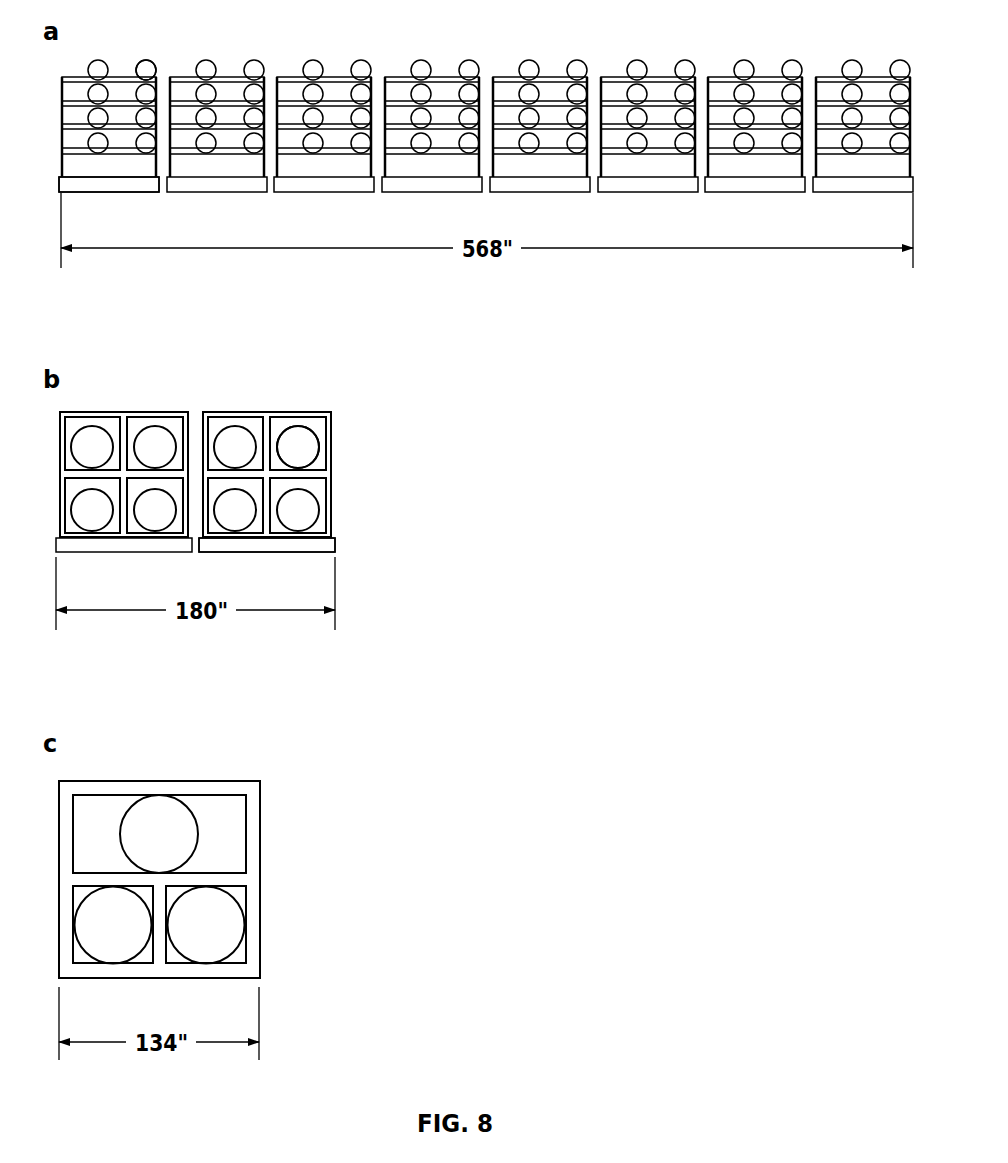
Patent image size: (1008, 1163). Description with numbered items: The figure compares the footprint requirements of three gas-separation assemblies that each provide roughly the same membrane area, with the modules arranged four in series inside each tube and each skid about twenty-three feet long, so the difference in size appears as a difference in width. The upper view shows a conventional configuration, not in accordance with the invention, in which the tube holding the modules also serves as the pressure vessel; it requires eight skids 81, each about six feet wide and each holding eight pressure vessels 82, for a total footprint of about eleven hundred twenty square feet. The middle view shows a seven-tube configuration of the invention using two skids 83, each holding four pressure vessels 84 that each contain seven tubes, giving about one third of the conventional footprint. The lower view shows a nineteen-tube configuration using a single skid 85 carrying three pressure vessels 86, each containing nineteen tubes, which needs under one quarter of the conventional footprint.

The skid 81 is at (136, 193).
The pressure vessel 82 is at (149, 61).
The skid 83 is at (336, 539).
The pressure vessel 84 is at (318, 437).
The skid 85 is at (260, 965).
The pressure vessel 86 is at (197, 815).